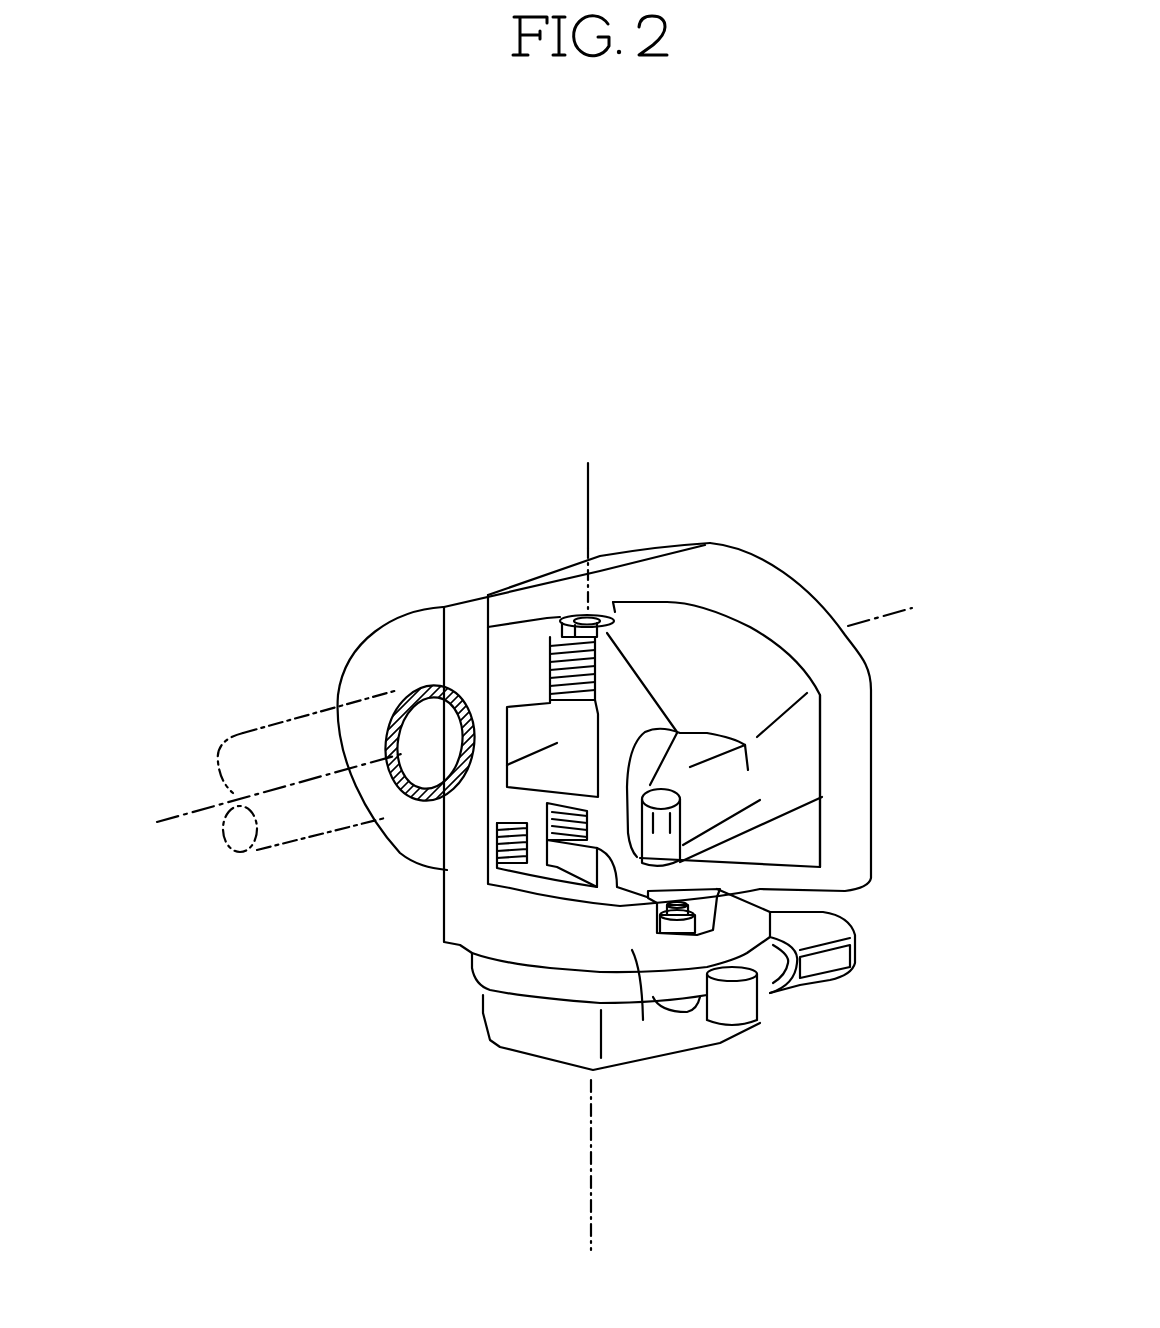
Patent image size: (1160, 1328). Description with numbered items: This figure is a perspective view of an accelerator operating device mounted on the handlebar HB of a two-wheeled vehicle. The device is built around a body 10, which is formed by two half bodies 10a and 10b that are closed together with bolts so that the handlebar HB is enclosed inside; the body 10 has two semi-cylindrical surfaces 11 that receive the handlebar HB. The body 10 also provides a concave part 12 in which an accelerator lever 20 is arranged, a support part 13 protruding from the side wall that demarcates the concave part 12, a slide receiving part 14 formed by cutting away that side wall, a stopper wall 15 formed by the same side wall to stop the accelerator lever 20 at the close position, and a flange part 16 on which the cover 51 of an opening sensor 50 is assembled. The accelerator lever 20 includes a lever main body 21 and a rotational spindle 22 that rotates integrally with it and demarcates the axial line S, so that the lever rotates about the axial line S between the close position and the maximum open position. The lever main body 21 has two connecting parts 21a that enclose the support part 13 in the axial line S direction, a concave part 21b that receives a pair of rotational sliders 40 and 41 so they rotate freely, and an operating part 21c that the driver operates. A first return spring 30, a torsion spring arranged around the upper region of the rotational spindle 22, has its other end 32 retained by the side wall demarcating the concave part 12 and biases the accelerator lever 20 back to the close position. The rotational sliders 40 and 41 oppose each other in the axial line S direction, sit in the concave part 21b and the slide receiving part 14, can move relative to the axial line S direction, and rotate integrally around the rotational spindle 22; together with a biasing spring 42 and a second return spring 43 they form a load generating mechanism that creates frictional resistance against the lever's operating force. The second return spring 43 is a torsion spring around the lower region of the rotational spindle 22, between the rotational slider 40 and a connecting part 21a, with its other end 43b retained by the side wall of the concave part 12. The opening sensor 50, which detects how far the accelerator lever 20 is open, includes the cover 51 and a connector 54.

The body 10 is at (657, 636).
The half body 10a is at (723, 573).
The half body 10b is at (667, 547).
The semi-cylindrical surfaces 11 is at (360, 735).
The concave part 12 is at (776, 848).
The support part 13 is at (483, 767).
The slide receiving part 14 is at (530, 867).
The stopper wall 15 is at (807, 810).
The flange part 16 is at (640, 1007).
The accelerator lever 20 is at (615, 825).
The lever main body 21 is at (720, 650).
The connecting parts 21a is at (547, 682).
The concave part 21b is at (567, 867).
The operating part 21c is at (683, 843).
The rotational spindle 22 is at (582, 608).
The first return spring 30 is at (537, 668).
The other end 32 is at (550, 647).
The rotational slider 40 is at (510, 873).
The rotational slider 41 is at (540, 867).
The biasing spring 42 is at (540, 838).
The second return spring 43 is at (777, 887).
The other end 43b is at (500, 826).
The opening sensor 50 is at (686, 1032).
The cover 51 is at (557, 1033).
The connector 54 is at (857, 966).
The handlebar HB is at (268, 724).
The axial line S is at (590, 485).